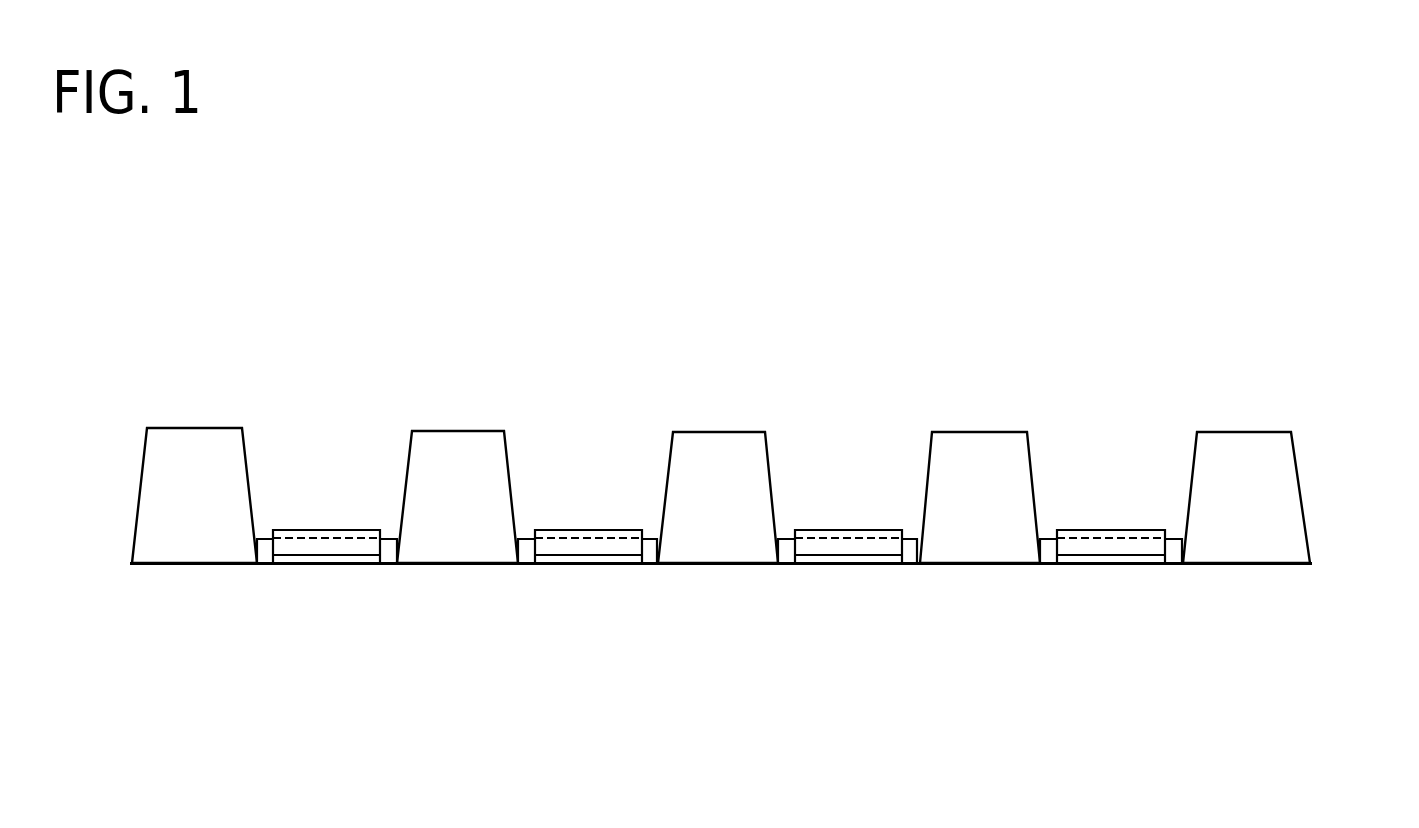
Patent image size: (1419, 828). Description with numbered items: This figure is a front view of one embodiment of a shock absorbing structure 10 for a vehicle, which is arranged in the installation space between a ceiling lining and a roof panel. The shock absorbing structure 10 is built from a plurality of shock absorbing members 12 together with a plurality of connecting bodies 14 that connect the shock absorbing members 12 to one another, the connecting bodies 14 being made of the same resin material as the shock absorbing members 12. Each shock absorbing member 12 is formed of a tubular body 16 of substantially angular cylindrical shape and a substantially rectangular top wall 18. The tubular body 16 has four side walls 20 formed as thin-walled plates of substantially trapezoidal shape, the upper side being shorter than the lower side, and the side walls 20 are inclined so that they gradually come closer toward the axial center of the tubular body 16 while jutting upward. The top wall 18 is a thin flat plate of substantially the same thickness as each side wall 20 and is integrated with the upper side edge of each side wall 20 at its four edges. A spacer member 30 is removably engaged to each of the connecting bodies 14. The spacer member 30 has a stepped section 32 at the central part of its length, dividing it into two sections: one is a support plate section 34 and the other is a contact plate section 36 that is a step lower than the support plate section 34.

The shock absorbing structure 10 is at (948, 376).
The shock absorbing member 12 is at (762, 445).
The connecting body 14 is at (393, 575).
The tubular body 16 is at (210, 462).
The top wall 18 is at (190, 428).
The side wall 20 is at (830, 418).
The spacer member 30 is at (320, 518).
The stepped section 32 is at (297, 548).
The support plate section 34 is at (343, 529).
The contact plate section 36 is at (345, 558).